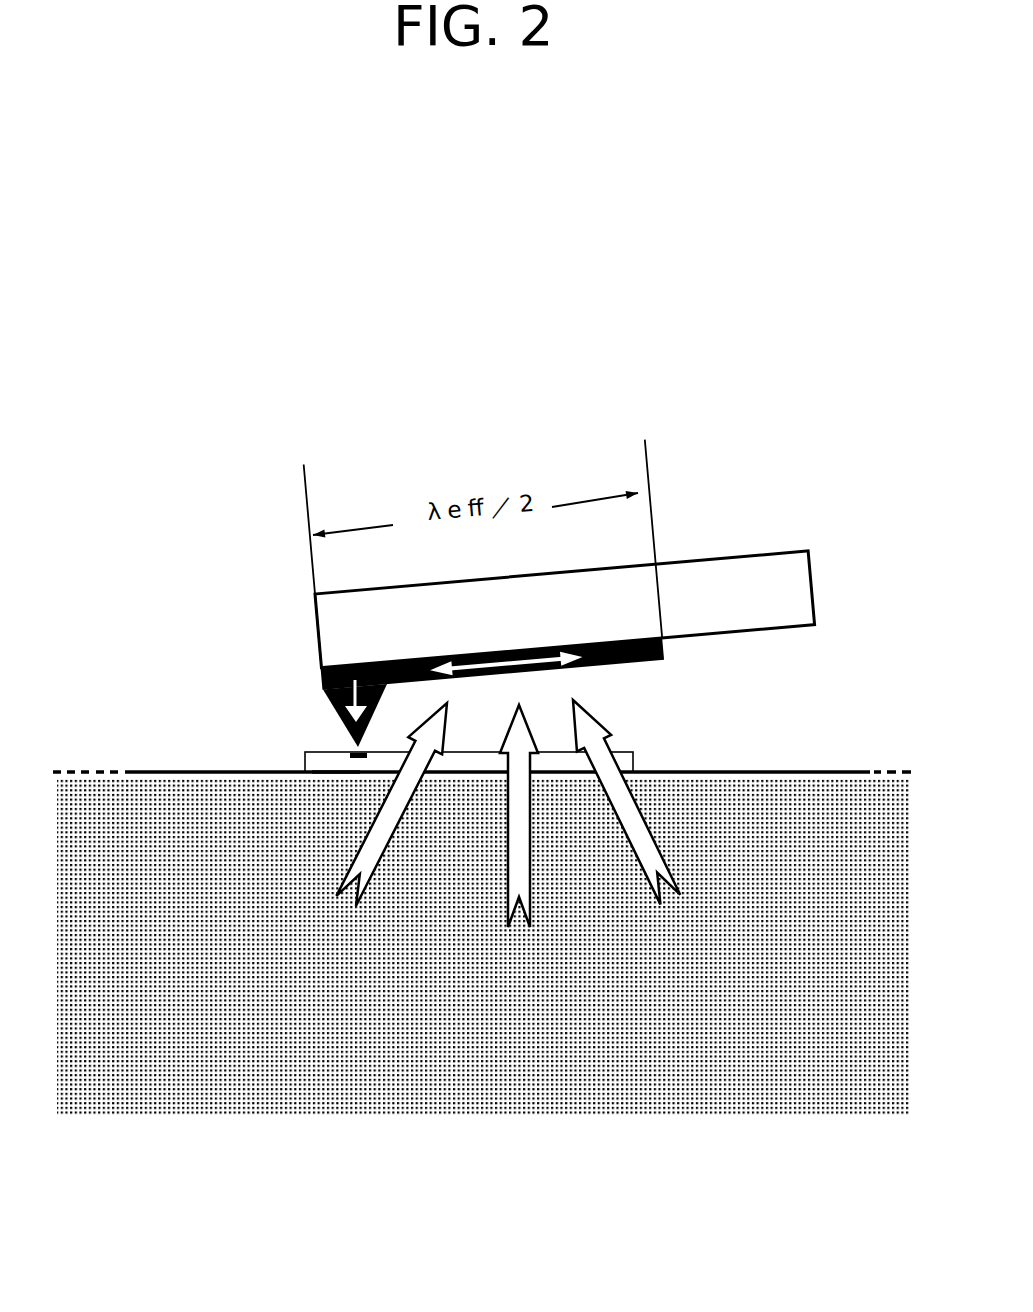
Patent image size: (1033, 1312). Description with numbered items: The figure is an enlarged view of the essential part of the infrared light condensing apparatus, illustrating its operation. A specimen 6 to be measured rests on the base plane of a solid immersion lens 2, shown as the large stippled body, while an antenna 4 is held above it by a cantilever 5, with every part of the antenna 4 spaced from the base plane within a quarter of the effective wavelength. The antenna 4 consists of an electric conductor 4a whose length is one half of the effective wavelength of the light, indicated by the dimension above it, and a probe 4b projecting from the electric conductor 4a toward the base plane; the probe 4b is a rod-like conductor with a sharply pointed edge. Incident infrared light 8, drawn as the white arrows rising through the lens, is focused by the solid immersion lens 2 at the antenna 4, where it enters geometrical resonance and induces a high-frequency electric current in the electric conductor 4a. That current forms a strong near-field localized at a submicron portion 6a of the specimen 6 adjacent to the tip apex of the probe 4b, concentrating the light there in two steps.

The solid immersion lens 2 is at (505, 1030).
The antenna 4 is at (495, 684).
The electric conductor 4a is at (603, 670).
The probe 4b is at (357, 741).
The cantilever 5 is at (782, 592).
The specimen 6 is at (305, 757).
The portion of the specimen 6a is at (333, 773).
The infrared light 8 is at (520, 865).